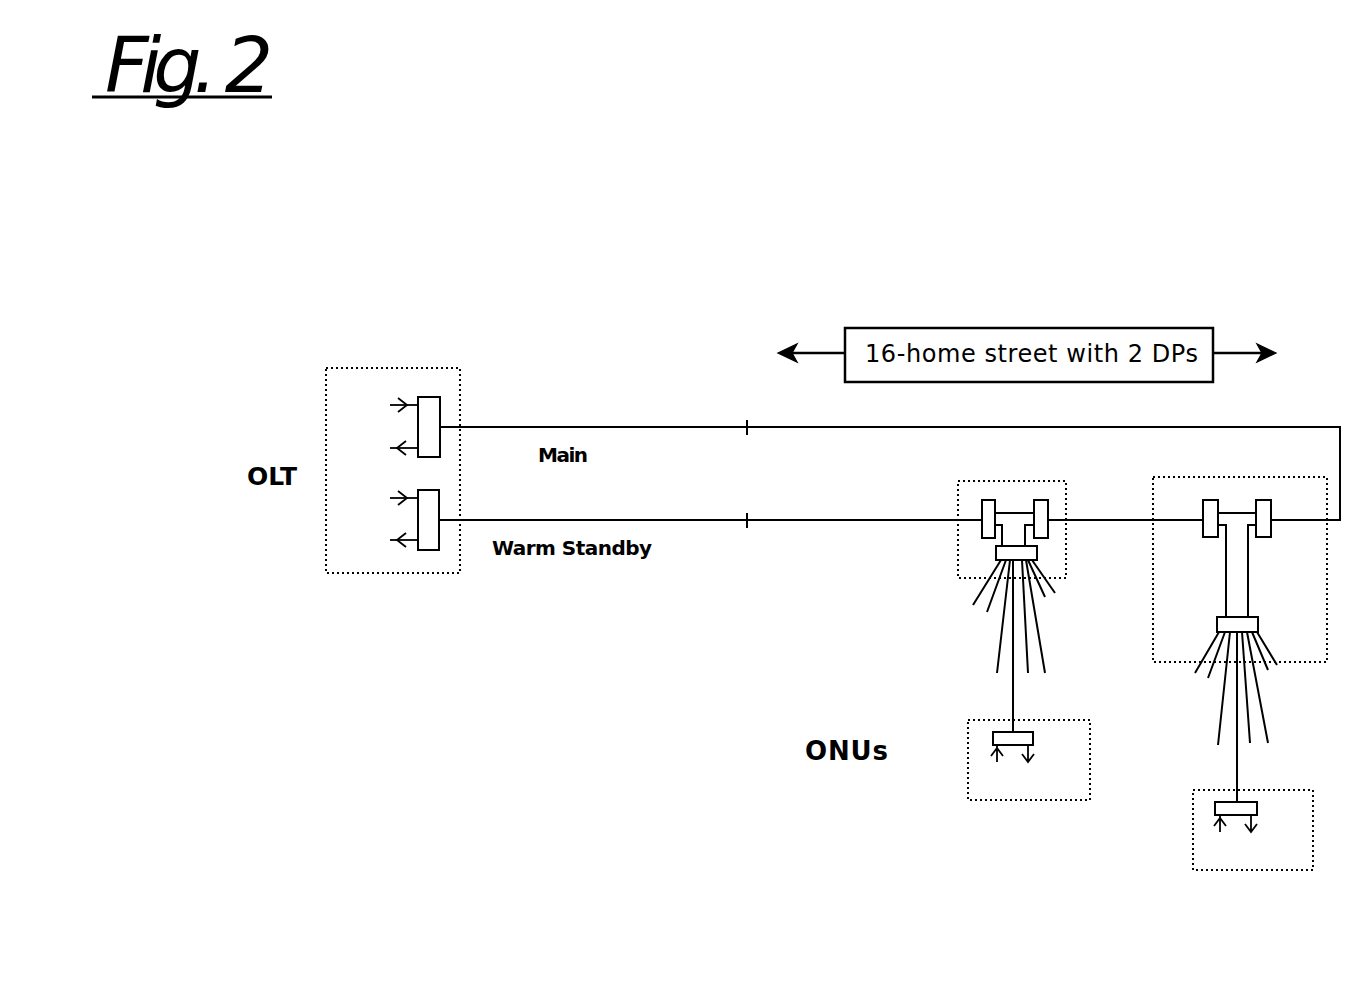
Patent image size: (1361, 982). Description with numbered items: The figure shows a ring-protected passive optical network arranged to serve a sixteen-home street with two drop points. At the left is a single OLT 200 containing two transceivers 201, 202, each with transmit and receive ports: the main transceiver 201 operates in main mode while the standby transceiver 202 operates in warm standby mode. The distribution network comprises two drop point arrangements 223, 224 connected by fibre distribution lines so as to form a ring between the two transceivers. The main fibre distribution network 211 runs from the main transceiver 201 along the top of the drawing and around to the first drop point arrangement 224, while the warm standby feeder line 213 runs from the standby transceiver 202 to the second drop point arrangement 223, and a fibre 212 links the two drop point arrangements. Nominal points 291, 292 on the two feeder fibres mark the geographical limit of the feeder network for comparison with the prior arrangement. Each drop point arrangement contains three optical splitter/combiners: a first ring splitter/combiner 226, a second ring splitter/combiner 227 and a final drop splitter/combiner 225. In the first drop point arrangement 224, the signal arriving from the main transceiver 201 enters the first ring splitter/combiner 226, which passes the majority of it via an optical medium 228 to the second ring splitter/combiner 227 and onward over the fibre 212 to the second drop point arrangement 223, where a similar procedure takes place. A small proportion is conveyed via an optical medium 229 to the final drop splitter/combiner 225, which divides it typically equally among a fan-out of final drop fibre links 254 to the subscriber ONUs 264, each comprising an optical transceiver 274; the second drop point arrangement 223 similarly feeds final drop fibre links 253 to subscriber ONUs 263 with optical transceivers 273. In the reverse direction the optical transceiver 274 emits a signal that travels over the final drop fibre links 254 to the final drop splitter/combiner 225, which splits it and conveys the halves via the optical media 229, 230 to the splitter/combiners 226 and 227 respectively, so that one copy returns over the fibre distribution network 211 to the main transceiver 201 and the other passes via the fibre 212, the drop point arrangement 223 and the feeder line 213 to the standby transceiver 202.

The OLT 200 is at (393, 459).
The main transceiver 201 is at (418, 416).
The standby transceiver 202 is at (418, 532).
The fibre distribution network 211 is at (890, 460).
The fibre 212 is at (1125, 535).
The feeder line 213 is at (710, 538).
The second drop point arrangement 223 is at (1012, 566).
The first drop point arrangement 224 is at (1240, 600).
The final drop splitter/combiner 225 is at (1223, 681).
The first ring splitter/combiner 226 is at (1285, 514).
The second ring splitter/combiner 227 is at (1189, 514).
The optical medium 228 is at (1240, 554).
The optical medium 229 is at (1272, 571).
The optical medium 230 is at (1204, 571).
The final drop fibre links 253 is at (1038, 646).
The final drop fibre links 254 is at (1261, 717).
The subscriber ONU 263 is at (1029, 776).
The subscriber ONU 264 is at (1253, 847).
The optical transceiver 273 is at (1035, 746).
The optical transceiver 274 is at (1259, 817).
The nominal point 291 is at (748, 416).
The nominal point 292 is at (748, 532).